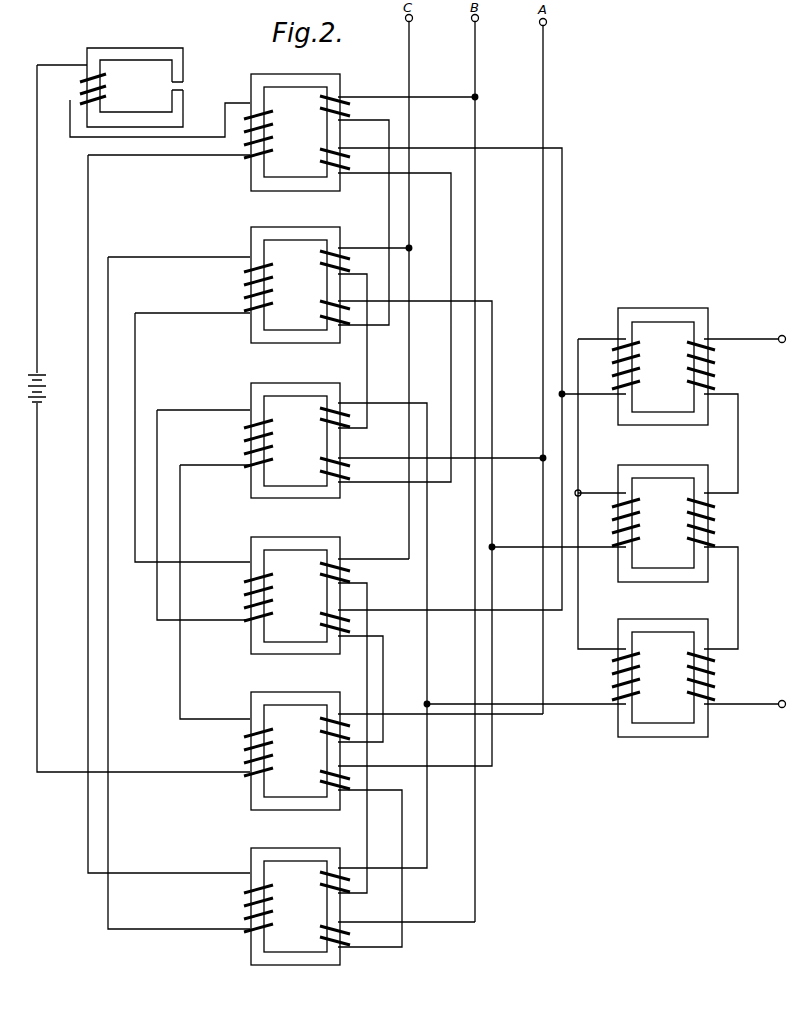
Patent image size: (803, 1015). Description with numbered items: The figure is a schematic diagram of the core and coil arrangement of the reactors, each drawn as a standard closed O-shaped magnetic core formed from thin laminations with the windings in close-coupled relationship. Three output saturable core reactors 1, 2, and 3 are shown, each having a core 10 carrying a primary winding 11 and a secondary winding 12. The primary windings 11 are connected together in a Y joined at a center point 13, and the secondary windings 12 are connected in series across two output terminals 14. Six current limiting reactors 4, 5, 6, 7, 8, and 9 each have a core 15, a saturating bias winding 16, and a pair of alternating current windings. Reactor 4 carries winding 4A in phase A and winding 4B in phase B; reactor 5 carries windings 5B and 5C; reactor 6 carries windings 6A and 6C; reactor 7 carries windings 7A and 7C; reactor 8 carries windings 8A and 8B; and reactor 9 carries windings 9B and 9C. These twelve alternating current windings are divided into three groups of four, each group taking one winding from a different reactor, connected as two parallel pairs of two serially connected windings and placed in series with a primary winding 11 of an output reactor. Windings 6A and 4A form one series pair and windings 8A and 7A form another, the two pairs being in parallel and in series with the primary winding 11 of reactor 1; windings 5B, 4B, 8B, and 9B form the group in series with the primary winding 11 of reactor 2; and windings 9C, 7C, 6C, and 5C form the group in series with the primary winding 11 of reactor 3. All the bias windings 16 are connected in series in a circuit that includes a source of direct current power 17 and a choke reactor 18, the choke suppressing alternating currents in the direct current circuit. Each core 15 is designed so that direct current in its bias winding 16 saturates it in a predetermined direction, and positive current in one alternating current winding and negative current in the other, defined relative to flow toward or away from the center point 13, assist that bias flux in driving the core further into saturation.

The output saturable core reactor 1 is at (663, 366).
The output saturable core reactor 2 is at (663, 523).
The output saturable core reactor 3 is at (663, 678).
The current limiting reactor 4 is at (295, 132).
The alternating current winding 4A is at (320, 161).
The alternating current winding 4B is at (324, 112).
The current limiting reactor 5 is at (295, 285).
The alternating current winding 5B is at (318, 310).
The alternating current winding 5C is at (324, 268).
The current limiting reactor 6 is at (295, 440).
The alternating current winding 6A is at (320, 473).
The alternating current winding 6C is at (322, 413).
The current limiting reactor 7 is at (295, 595).
The alternating current winding 7A is at (320, 627).
The alternating current winding 7C is at (322, 567).
The current limiting reactor 8 is at (295, 751).
The alternating current winding 8A is at (322, 721).
The alternating current winding 8B is at (320, 783).
The current limiting reactor 9 is at (295, 906).
The alternating current winding 9B is at (320, 938).
The alternating current winding 9C is at (322, 877).
The core 10 is at (663, 511).
The primary winding 11 is at (626, 342).
The secondary winding 12 is at (712, 368).
The center point 13 is at (580, 496).
The output terminal 14 is at (780, 335).
The core 15 is at (295, 505).
The saturating bias winding 16 is at (248, 136).
The source of direct current power 17 is at (50, 387).
The choke reactor 18 is at (131, 87).